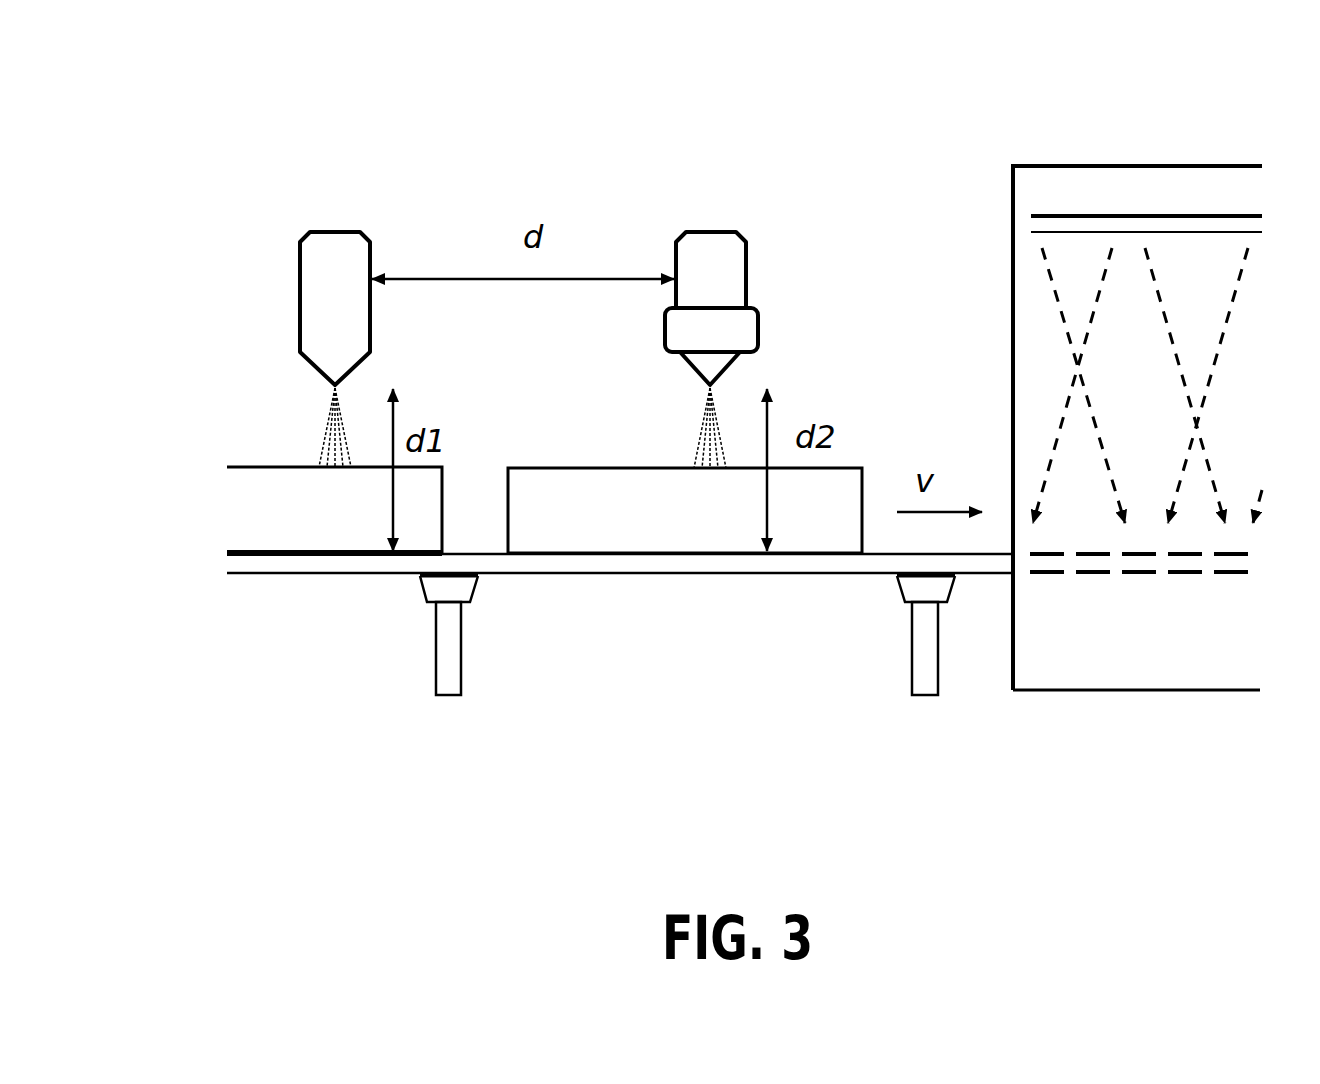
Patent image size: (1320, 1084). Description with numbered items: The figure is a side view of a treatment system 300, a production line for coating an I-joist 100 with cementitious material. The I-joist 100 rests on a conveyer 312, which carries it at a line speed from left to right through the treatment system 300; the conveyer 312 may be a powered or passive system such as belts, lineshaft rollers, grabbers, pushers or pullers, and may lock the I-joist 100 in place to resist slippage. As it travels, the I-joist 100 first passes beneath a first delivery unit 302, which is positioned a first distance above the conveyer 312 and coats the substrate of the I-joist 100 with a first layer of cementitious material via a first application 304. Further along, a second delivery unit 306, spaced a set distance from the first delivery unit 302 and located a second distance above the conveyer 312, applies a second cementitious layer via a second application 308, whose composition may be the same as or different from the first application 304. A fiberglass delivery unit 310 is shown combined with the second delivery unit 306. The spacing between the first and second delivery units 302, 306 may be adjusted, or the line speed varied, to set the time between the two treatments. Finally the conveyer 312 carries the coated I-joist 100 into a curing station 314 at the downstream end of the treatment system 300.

The treatment system 300 is at (248, 97).
The I-joist 100 is at (544, 510).
The first delivery unit 302 is at (335, 308).
The first application 304 is at (320, 433).
The second delivery unit 306 is at (711, 270).
The second application 308 is at (700, 433).
The fiberglass delivery unit 310 is at (711, 346).
The conveyer 312 is at (250, 563).
The curing station 314 is at (1076, 612).